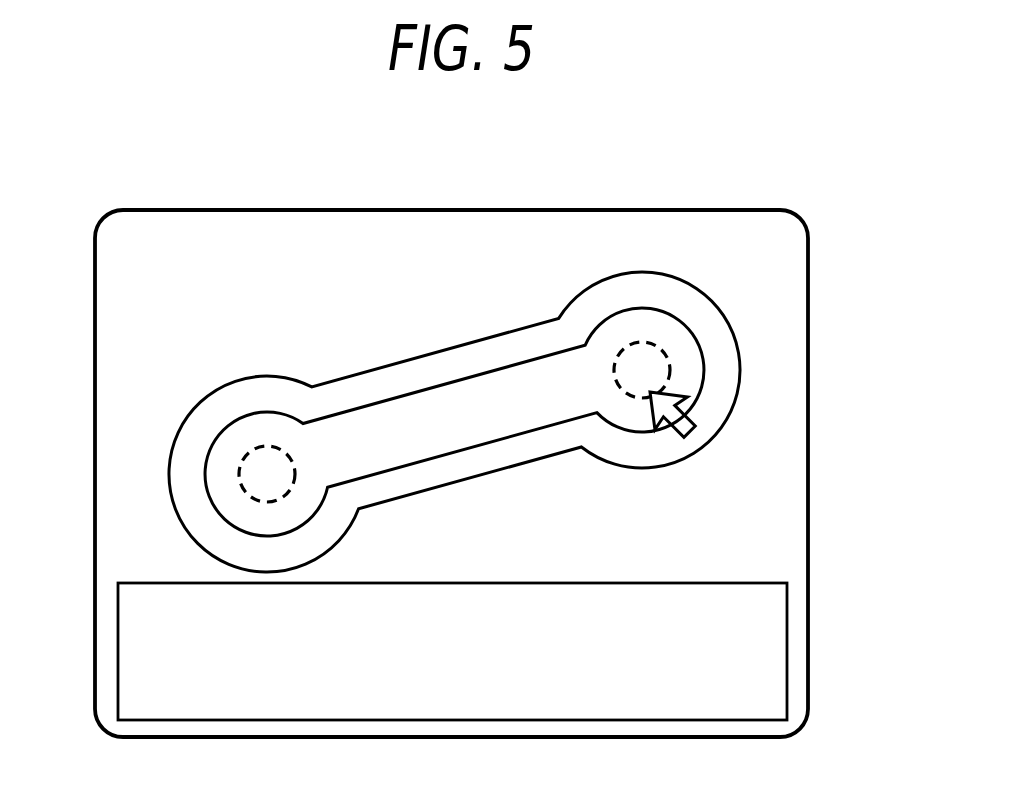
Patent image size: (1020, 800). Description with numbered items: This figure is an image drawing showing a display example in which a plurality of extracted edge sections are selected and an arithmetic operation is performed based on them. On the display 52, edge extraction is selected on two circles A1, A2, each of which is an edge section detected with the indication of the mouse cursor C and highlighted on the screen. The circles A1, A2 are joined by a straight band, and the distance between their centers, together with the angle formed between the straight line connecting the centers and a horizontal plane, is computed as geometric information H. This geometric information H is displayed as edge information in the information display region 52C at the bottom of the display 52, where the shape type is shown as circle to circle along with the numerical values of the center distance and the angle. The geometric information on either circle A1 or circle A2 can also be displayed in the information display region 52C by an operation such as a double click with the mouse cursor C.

The display 52 is at (266, 209).
The information display region 52C is at (787, 675).
The circle A1 is at (240, 485).
The circle A2 is at (668, 360).
The mouse cursor C is at (645, 428).
The geometric information H is at (728, 611).